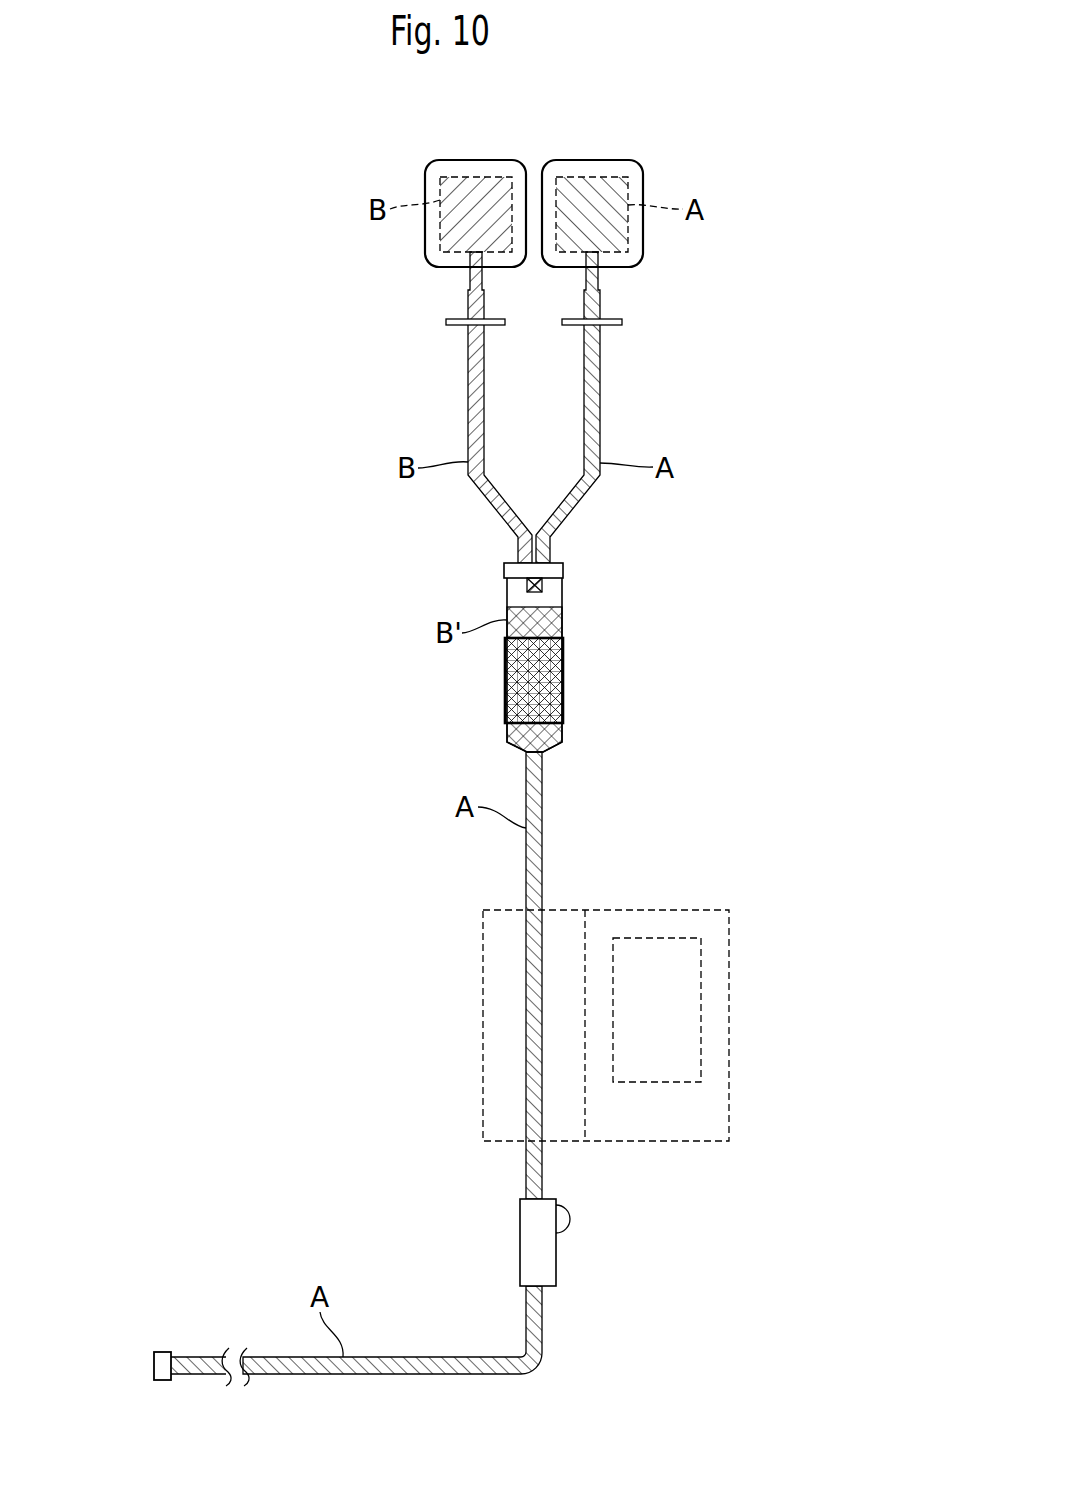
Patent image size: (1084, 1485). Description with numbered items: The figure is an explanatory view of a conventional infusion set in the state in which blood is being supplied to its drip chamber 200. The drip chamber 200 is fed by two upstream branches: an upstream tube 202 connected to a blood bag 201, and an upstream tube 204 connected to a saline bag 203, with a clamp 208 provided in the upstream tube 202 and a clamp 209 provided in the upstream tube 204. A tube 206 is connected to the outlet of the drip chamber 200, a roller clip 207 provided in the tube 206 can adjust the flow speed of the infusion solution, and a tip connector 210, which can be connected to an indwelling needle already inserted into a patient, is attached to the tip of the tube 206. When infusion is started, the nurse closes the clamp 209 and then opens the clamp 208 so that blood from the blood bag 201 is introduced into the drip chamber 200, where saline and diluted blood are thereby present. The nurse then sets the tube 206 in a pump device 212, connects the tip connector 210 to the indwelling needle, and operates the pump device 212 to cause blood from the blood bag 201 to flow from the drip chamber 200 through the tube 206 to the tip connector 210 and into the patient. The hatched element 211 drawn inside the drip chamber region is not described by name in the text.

The drip chamber 200 is at (562, 590).
The blood bag 201 is at (481, 160).
The upstream tube 202 is at (468, 400).
The saline bag 203 is at (597, 160).
The upstream tube 204 is at (600, 390).
The tube 206 is at (542, 807).
The roller clip 207 is at (556, 1247).
The clamp 208 is at (446, 322).
The clamp 209 is at (622, 322).
The tip connector 210 is at (163, 1352).
The sensor unit 211 is at (563, 670).
The pump device 212 is at (568, 910).